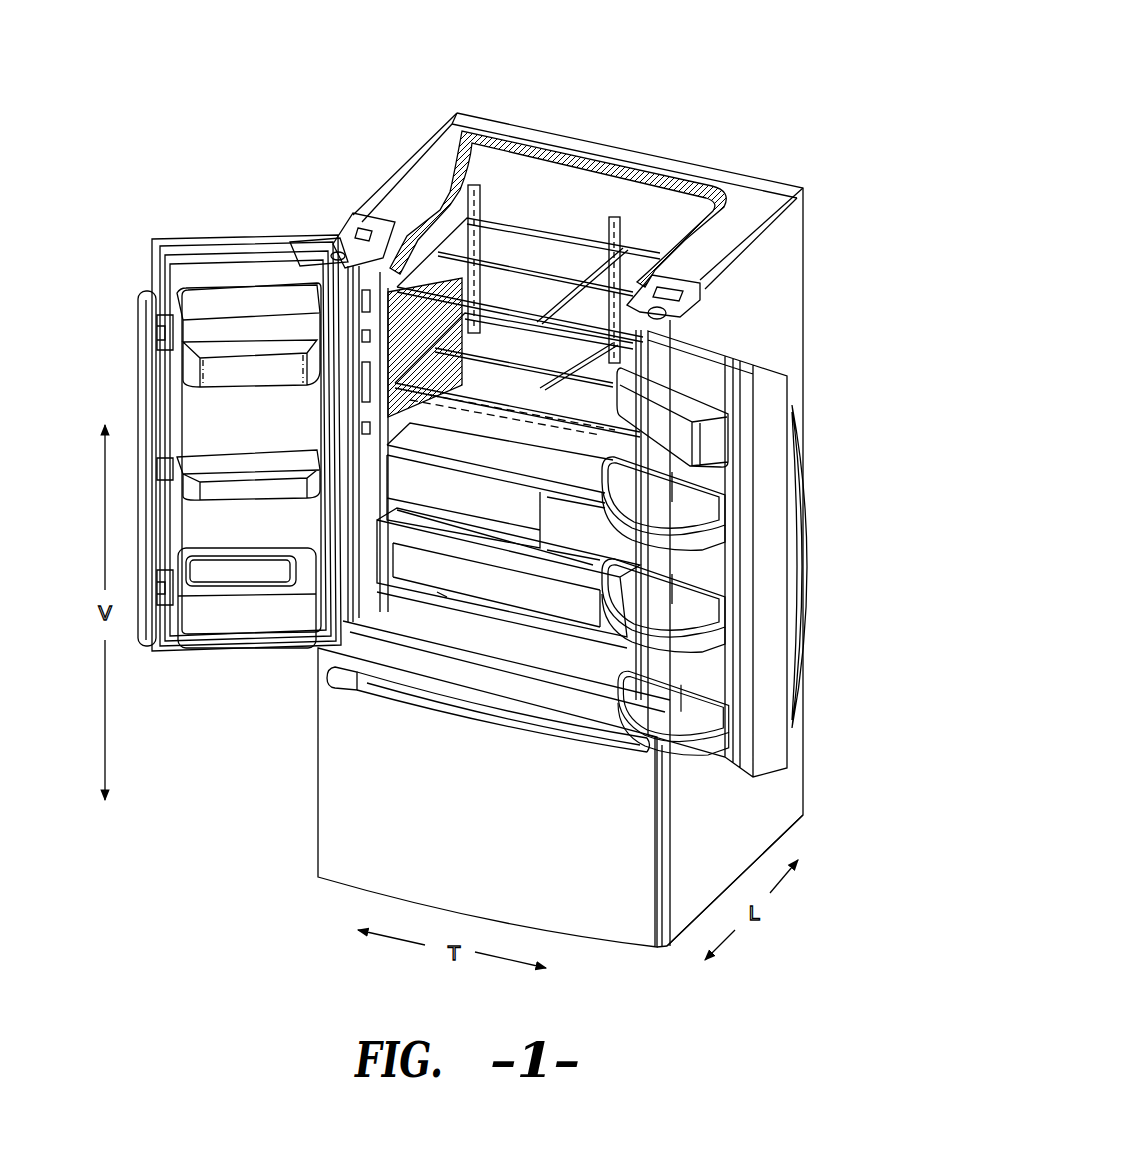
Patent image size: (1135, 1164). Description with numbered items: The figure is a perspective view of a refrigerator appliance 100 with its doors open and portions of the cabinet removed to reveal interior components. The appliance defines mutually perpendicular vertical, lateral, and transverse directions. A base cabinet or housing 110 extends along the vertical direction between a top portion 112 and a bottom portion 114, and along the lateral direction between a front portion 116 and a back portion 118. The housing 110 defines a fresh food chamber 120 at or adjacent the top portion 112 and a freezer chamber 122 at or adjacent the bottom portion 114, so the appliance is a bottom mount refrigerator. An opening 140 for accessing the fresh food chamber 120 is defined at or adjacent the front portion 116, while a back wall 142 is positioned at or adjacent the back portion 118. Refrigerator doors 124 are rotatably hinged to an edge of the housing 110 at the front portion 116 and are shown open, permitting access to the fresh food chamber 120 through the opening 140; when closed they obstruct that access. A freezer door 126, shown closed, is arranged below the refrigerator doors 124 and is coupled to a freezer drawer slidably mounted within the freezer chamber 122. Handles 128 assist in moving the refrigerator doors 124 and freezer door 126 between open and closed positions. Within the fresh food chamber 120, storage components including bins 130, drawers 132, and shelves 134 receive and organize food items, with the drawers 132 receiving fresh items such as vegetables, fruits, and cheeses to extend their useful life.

The refrigerator appliance 100 is at (735, 86).
The housing 110 is at (790, 792).
The top portion 112 is at (816, 186).
The bottom portion 114 is at (806, 812).
The front portion 116 is at (326, 238).
The back portion 118 is at (456, 106).
The fresh food chamber 120 is at (365, 478).
The freezer chamber 122 is at (344, 790).
The refrigerator doors 124 is at (216, 237).
The freezer door 126 is at (628, 918).
The handles 128 is at (523, 733).
The bins 130 is at (250, 370).
The drawers 132 is at (499, 508).
The shelves 134 is at (518, 238).
The opening 140 is at (420, 648).
The back wall 142 is at (520, 178).